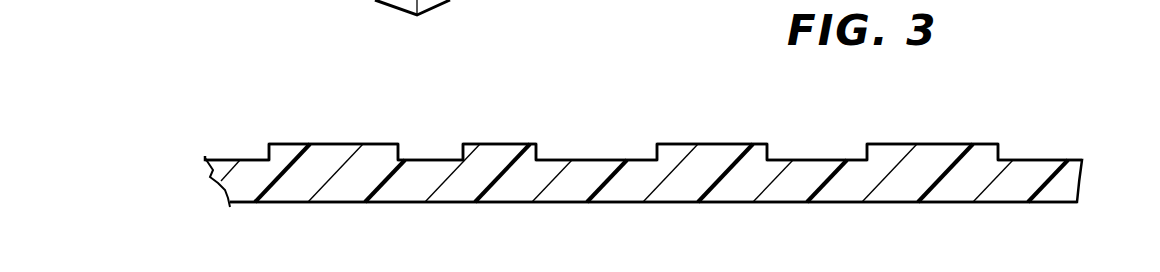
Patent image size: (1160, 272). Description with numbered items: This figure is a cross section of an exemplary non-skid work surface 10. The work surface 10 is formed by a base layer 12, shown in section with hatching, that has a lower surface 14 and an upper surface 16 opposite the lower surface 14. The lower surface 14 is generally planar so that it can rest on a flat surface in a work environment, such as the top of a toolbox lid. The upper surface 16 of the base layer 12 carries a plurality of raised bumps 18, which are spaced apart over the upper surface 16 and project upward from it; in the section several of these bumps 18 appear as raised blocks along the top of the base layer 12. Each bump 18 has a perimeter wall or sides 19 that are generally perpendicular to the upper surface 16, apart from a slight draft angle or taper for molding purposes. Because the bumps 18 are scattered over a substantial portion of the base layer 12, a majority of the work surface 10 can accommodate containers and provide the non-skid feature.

The non-skid work surface 10 is at (1102, 165).
The base layer 12 is at (232, 189).
The lower surface 14 is at (402, 203).
The upper surface 16 is at (447, 159).
The raised bumps 18 is at (357, 143).
The perimeter wall or sides 19 is at (540, 158).